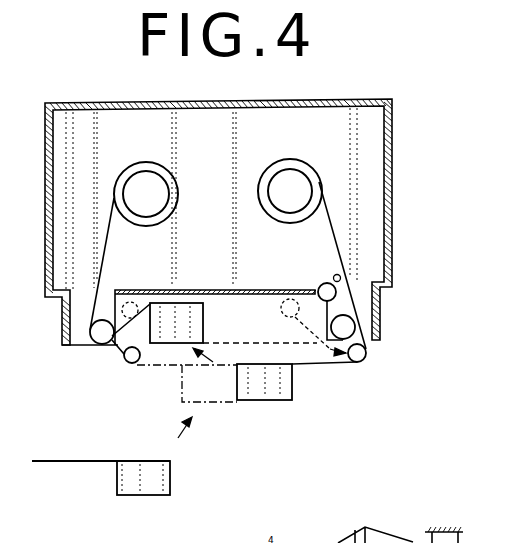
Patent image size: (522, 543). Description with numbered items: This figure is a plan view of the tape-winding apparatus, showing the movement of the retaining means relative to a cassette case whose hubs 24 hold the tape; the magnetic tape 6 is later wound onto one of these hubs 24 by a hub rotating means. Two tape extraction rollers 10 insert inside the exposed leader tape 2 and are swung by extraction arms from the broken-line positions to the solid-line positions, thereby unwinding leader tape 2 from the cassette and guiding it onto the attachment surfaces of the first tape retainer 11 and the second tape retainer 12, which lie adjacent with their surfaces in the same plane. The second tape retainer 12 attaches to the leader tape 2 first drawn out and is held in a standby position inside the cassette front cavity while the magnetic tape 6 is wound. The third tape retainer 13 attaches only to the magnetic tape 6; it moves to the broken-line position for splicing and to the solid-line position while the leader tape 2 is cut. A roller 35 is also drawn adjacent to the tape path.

The leader tape 2 is at (108, 207).
The hub 24 is at (303, 171).
The tape extraction rollers 10 is at (129, 363).
The second tape retainer 12 is at (203, 327).
The first tape retainer 11 is at (288, 394).
The capstan roller 35 is at (357, 323).
The magnetic tape 6 is at (55, 462).
The third tape retainer 13 is at (163, 495).